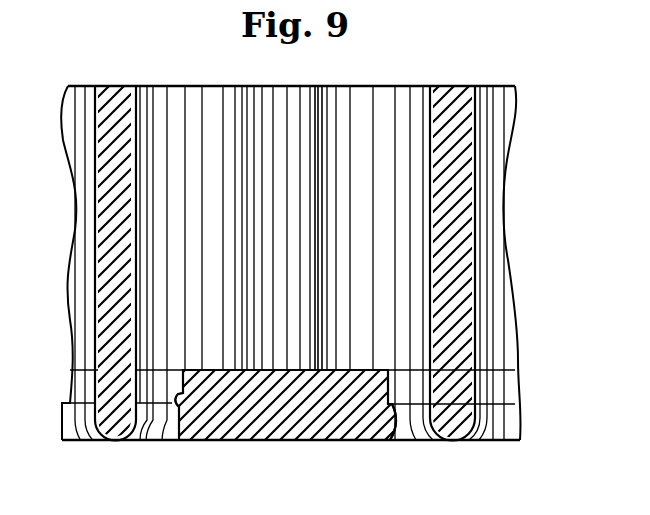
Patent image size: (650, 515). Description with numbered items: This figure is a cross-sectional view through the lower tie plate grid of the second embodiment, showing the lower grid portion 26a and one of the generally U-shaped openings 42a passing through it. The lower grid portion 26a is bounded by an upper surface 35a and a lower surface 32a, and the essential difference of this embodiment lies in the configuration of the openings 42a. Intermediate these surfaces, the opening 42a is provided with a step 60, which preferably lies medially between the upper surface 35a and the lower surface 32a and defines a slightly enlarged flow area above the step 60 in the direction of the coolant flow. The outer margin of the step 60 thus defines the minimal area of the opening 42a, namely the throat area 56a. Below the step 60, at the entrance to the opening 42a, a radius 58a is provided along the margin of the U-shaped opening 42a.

The lower grid portion 26a is at (392, 432).
The lower surface 32a is at (372, 416).
The upper surface 35a is at (285, 366).
The opening 42a is at (395, 390).
The throat area 56a is at (142, 438).
The radius 58a is at (180, 438).
The step 60 is at (176, 405).